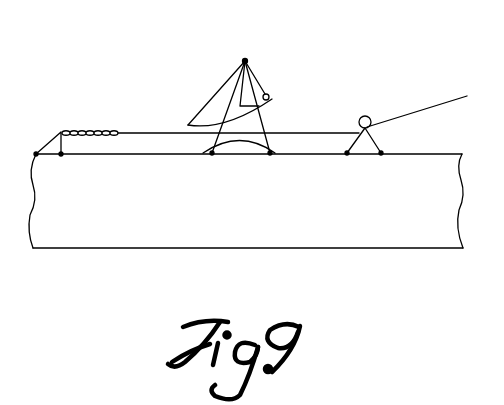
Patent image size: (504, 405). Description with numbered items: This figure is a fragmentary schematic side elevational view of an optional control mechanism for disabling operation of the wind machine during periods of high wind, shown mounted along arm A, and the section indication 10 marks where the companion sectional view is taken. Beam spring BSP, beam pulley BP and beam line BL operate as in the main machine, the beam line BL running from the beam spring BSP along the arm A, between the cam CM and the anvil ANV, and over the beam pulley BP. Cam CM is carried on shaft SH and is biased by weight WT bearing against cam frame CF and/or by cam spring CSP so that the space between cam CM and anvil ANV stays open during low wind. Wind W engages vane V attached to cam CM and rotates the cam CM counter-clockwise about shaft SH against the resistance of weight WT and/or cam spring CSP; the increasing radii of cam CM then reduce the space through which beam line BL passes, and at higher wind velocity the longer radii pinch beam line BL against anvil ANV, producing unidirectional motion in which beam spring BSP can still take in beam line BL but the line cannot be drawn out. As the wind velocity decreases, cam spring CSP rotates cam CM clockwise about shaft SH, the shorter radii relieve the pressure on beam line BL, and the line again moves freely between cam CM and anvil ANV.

The arm A is at (380, 252).
The beam spring BSP is at (77, 130).
The wind W is at (118, 73).
The shaft SH is at (244, 61).
The cam CM is at (219, 92).
The cam spring CSP is at (257, 78).
The weight WT is at (270, 97).
The vane V is at (262, 106).
The anvil ANV is at (243, 150).
The cam frame CF is at (266, 140).
The beam pulley BP is at (366, 115).
The beam line BL is at (415, 116).
The section line 10- 10 is at (304, 17).